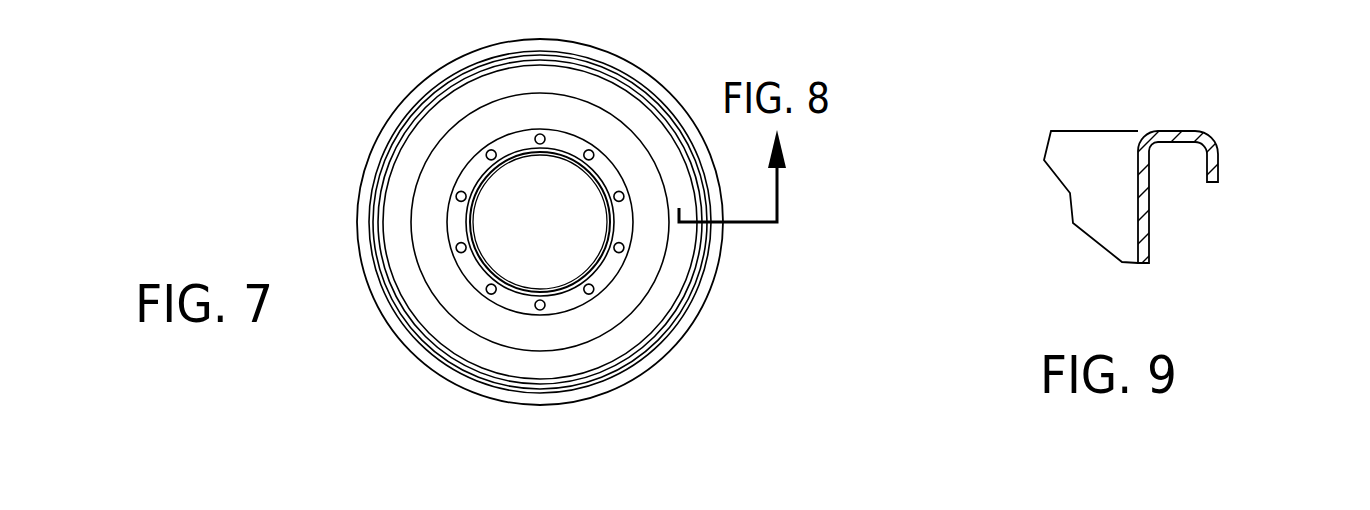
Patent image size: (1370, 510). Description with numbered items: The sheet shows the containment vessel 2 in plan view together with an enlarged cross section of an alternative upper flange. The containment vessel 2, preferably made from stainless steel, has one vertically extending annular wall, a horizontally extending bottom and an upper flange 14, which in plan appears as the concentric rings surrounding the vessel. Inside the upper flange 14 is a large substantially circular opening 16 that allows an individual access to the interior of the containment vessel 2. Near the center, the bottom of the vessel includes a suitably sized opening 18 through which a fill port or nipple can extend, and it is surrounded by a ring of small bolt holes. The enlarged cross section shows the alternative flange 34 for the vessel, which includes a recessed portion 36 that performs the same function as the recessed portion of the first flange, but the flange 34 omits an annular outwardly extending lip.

In FIG. 7, the containment vessel 2 is at (348, 223).
In FIG. 7, the upper flange 14 is at (368, 158).
In FIG. 7, the circular opening 16 is at (442, 117).
In FIG. 7, the opening 18 is at (553, 288).
In FIG. 9, the flange 34 is at (1240, 130).
In FIG. 9, the recessed portion 36 is at (1193, 205).